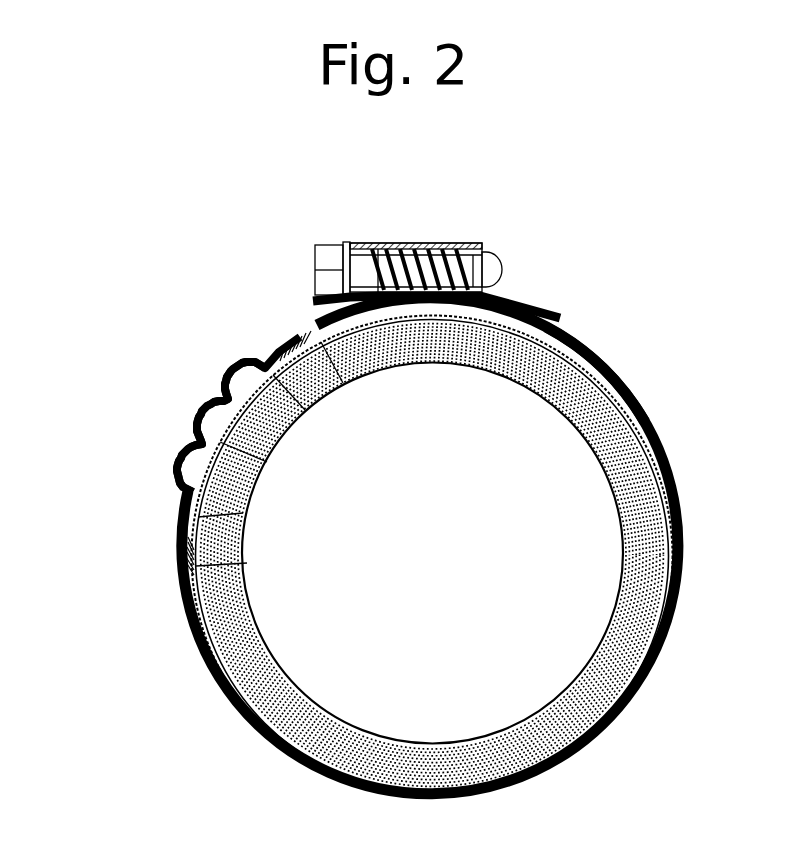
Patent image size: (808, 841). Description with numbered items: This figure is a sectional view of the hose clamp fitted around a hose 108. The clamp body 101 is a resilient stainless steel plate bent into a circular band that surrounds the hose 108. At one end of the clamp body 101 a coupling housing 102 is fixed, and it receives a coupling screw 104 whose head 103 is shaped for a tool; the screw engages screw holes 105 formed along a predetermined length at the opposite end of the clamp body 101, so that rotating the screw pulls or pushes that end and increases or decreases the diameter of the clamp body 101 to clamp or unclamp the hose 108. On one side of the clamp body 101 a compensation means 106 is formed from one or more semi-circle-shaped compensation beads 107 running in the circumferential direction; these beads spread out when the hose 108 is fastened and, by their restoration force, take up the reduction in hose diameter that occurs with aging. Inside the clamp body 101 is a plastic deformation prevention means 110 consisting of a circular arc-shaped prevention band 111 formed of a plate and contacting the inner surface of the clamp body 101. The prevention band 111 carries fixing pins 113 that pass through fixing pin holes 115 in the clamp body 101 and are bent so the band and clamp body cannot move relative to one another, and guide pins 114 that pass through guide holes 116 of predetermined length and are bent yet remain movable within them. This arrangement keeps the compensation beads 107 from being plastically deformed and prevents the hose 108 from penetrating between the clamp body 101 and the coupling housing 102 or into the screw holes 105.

The clamp body 101 is at (641, 690).
The coupling housing 102 is at (405, 244).
The head 103 is at (327, 259).
The coupling screw 104 is at (499, 253).
The screw holes 105 is at (566, 330).
The compensation means 106 is at (120, 336).
The compensation beads 107 is at (234, 360).
The hose 108 is at (645, 523).
The plastic deformation prevention means 110 is at (352, 497).
The prevention band 111 is at (265, 460).
The fixing pins 113 is at (343, 384).
The guide pins 114 is at (247, 563).
The fixing pin holes 115 is at (299, 408).
The guide holes 116 is at (245, 514).